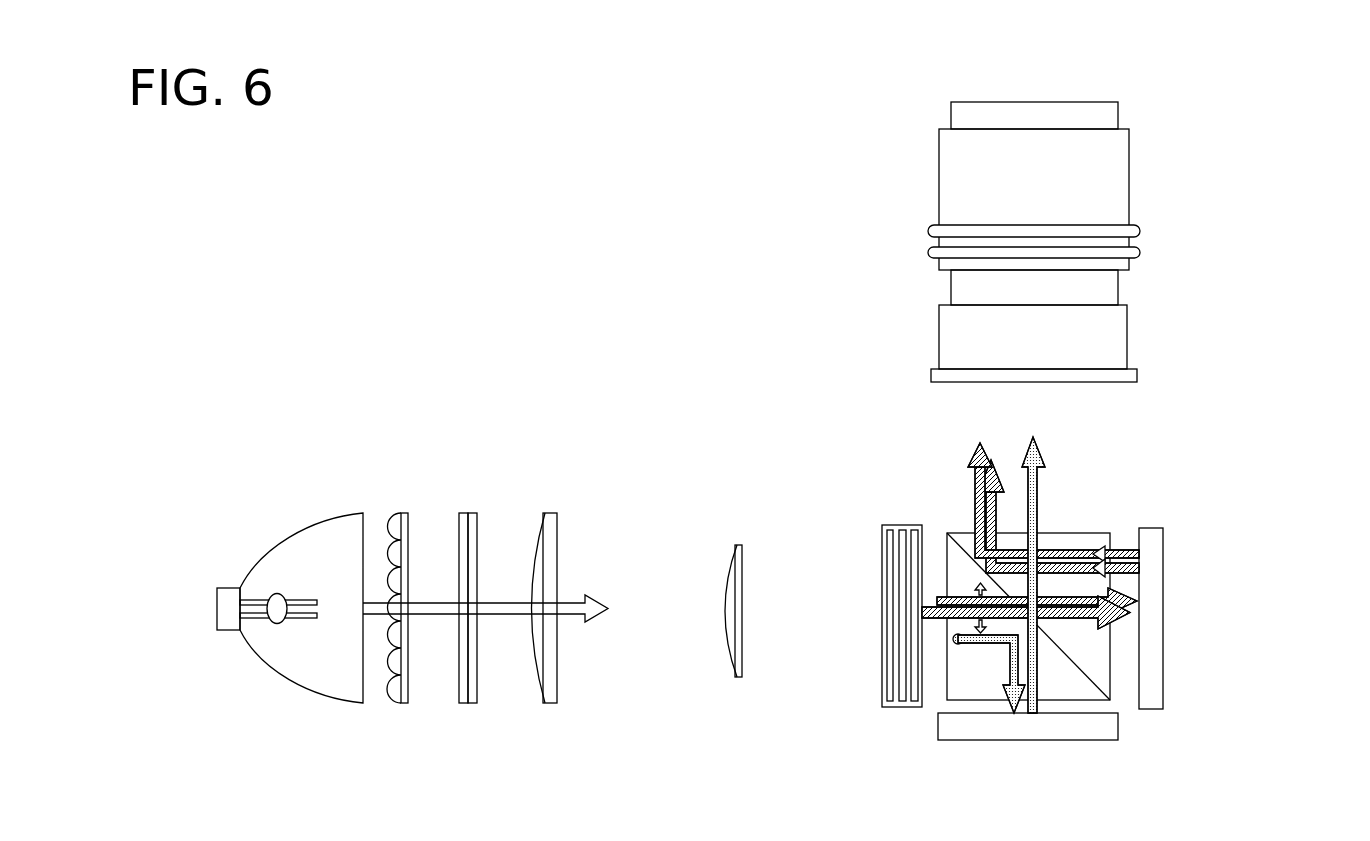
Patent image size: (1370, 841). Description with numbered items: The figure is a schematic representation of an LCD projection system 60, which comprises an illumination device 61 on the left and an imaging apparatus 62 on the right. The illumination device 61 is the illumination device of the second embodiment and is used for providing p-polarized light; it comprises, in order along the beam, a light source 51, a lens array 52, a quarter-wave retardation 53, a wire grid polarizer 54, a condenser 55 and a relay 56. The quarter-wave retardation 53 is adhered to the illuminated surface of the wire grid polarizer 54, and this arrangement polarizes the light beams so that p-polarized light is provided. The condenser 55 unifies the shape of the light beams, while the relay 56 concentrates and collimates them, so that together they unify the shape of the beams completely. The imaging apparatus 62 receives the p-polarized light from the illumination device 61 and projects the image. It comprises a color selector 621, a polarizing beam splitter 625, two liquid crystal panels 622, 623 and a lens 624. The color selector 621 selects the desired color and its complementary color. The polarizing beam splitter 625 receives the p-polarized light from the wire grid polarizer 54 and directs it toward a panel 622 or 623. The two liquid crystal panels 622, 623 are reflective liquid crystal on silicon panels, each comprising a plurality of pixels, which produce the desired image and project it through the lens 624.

The light source 51 is at (268, 530).
The lens array 52 is at (406, 513).
The quarter-wave retardation 53 is at (463, 513).
The wire grid polarizer 54 is at (473, 513).
The condenser 55 is at (548, 513).
The relay 56 is at (740, 538).
The LCD projection system 60 is at (585, 252).
The illumination device 61 is at (488, 453).
The imaging apparatus 62 is at (1183, 245).
The color selector 621 is at (902, 530).
The liquid crystal panel 622 is at (1073, 733).
The liquid crystal panel 623 is at (1152, 532).
The lens 624 is at (950, 175).
The polarizing beam splitter 625 is at (1112, 692).